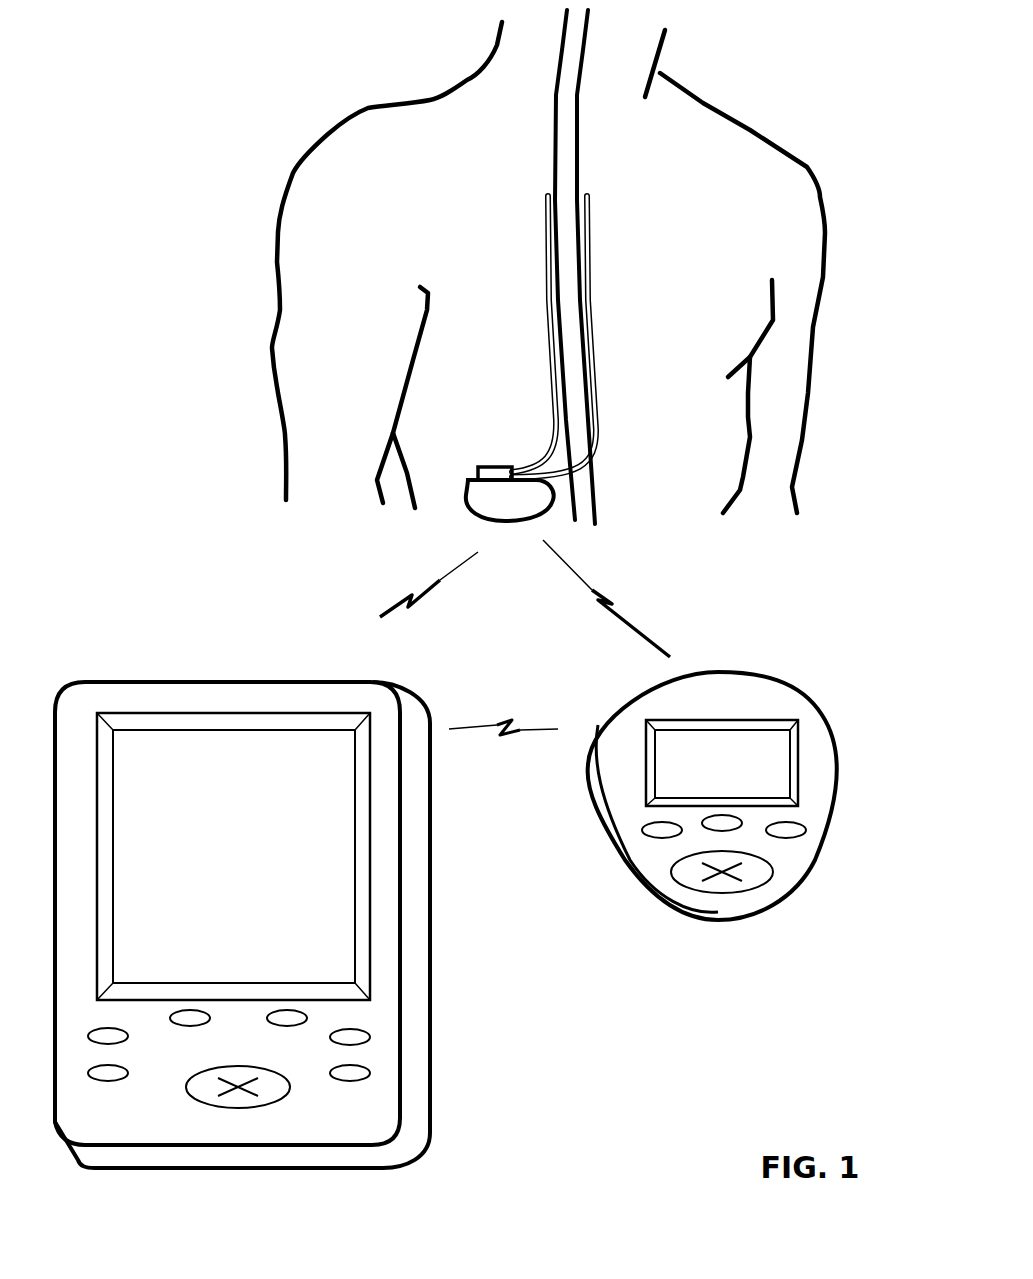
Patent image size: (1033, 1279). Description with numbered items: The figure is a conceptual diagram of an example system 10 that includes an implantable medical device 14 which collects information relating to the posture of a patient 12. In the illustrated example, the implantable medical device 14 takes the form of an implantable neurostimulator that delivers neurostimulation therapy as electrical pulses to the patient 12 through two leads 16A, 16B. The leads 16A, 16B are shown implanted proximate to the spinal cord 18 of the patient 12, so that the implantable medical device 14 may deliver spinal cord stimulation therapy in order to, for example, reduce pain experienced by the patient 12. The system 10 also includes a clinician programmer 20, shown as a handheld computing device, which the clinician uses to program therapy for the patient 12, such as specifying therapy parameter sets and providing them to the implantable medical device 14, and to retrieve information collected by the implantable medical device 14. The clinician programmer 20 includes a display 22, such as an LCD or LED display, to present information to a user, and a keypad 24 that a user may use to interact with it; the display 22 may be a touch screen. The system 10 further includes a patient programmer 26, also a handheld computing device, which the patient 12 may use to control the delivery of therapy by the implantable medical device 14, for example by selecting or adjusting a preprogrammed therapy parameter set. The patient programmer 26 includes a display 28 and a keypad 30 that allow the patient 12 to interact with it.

The system 10 is at (142, 85).
The patient 12 is at (755, 100).
The implantable medical device 14 is at (465, 470).
The lead 16A is at (535, 309).
The lead 16B is at (612, 308).
The spinal cord 18 is at (607, 148).
The clinician programmer 20 is at (302, 895).
The display 22 is at (320, 855).
The keypad 24 is at (335, 1095).
The patient programmer 26 is at (685, 772).
The display 28 is at (671, 776).
The keypad 30 is at (662, 860).